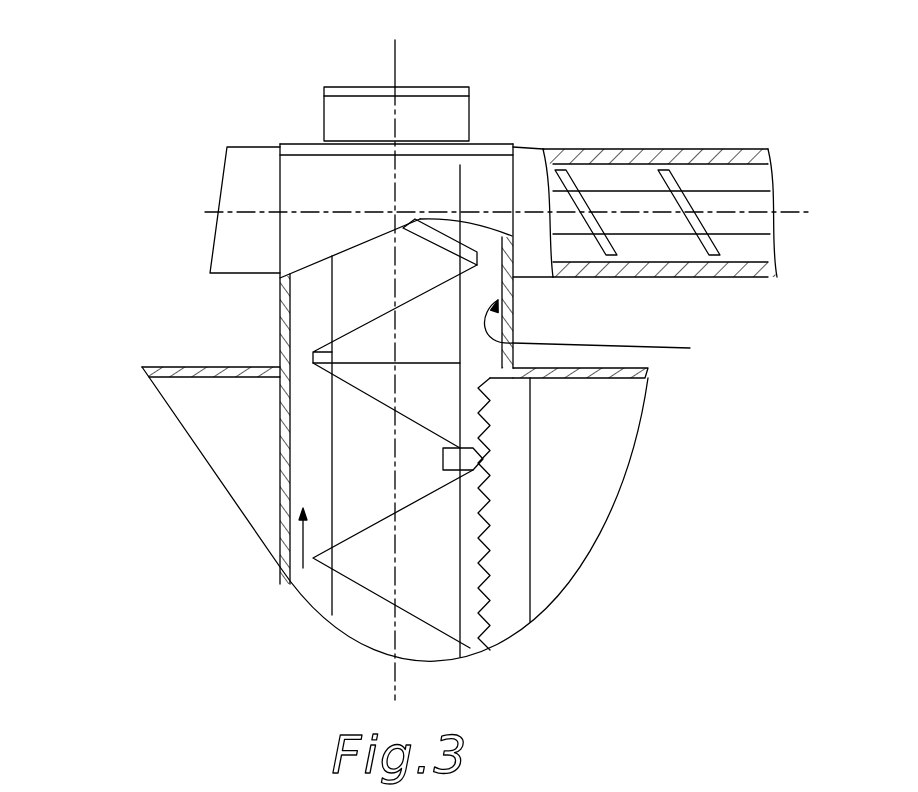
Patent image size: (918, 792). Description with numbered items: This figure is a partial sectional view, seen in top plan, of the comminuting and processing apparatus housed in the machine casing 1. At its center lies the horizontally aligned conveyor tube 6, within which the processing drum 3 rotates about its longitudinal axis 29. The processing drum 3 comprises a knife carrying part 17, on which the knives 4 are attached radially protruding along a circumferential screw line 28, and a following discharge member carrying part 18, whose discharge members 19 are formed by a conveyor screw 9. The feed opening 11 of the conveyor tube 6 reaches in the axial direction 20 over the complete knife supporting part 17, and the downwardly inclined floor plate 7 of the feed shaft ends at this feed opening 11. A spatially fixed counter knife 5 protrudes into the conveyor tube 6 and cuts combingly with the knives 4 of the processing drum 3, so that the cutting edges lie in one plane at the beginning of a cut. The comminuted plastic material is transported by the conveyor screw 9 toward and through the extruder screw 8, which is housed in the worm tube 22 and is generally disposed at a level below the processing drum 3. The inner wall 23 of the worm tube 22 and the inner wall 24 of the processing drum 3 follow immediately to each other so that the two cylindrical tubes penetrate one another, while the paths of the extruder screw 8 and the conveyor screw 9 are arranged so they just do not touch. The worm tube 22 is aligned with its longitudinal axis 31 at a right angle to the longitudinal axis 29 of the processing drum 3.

The machine casing 1 is at (175, 378).
The processing drum 3 is at (330, 500).
The knives 4 is at (465, 467).
The counter knife 5 is at (500, 553).
The conveyor tube 6 is at (283, 357).
The floor plate 7 is at (545, 487).
The extruder screw 8 is at (733, 203).
The conveyor screw 9 is at (413, 262).
The feed opening 11 is at (512, 417).
The knife carrying part 17 is at (385, 484).
The discharge member carrying part 18 is at (450, 354).
The discharge members 19 is at (427, 244).
The axial direction 20 is at (312, 558).
The worm tube 22 is at (648, 155).
The inner wall of the worm tube 23 is at (612, 165).
The inner wall of the processing drum 24 is at (606, 332).
The circumferential screw line 28 is at (383, 403).
The longitudinal axis of the processing drum 29 is at (395, 173).
The longitudinal axis of the worm tube 31 is at (793, 213).